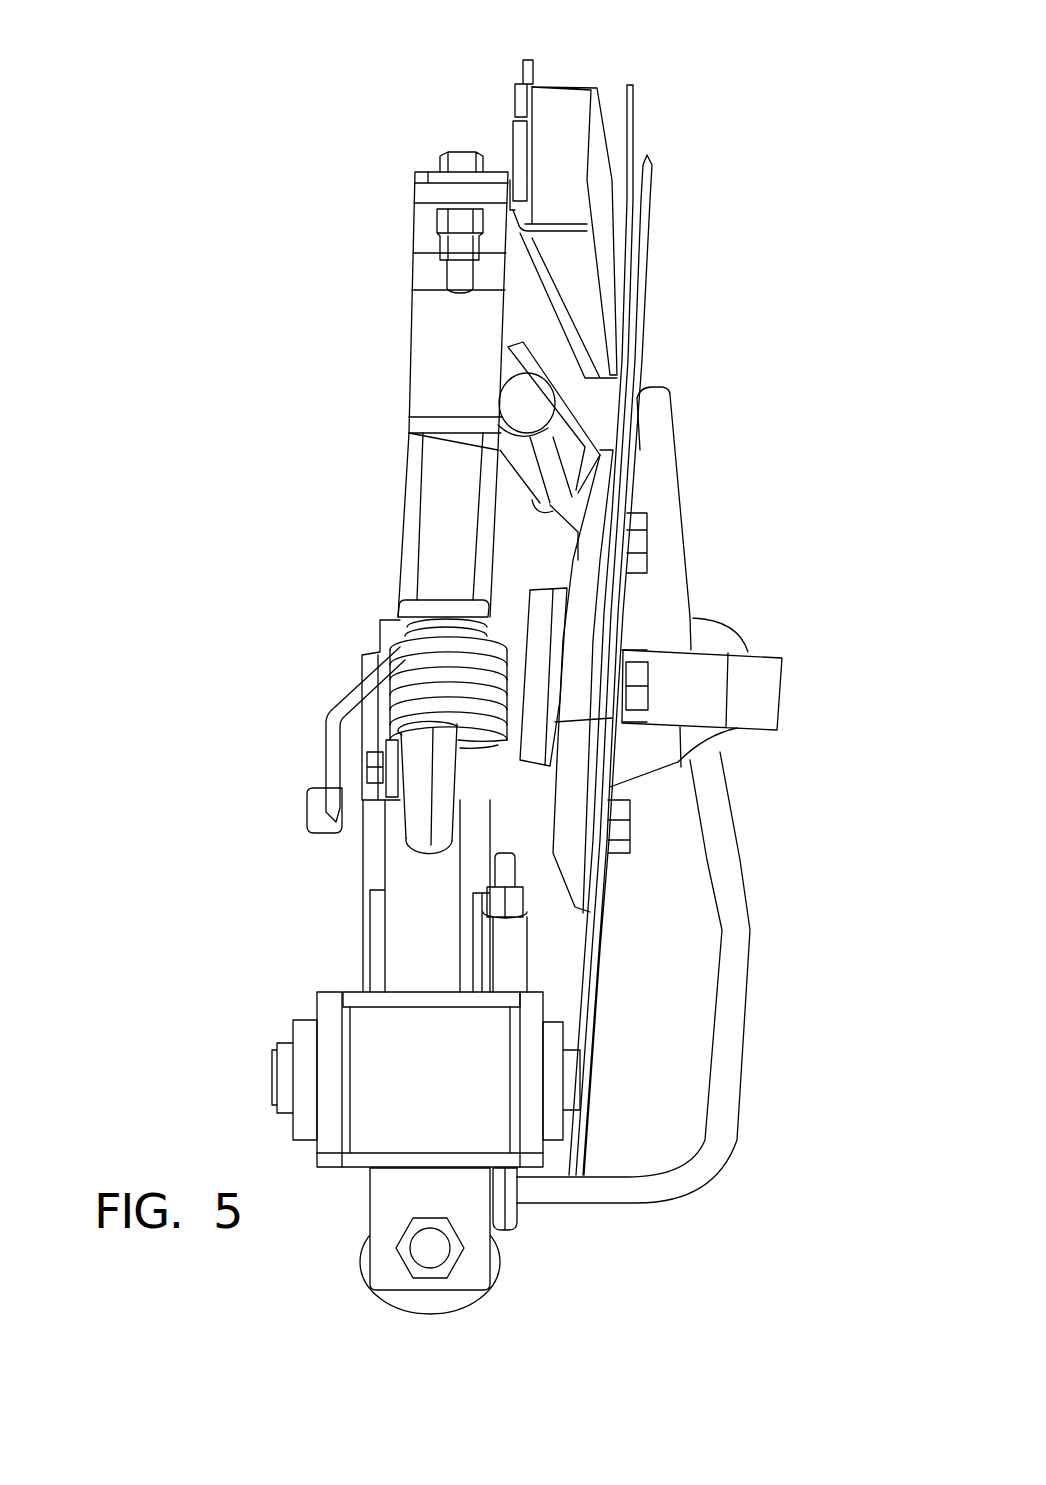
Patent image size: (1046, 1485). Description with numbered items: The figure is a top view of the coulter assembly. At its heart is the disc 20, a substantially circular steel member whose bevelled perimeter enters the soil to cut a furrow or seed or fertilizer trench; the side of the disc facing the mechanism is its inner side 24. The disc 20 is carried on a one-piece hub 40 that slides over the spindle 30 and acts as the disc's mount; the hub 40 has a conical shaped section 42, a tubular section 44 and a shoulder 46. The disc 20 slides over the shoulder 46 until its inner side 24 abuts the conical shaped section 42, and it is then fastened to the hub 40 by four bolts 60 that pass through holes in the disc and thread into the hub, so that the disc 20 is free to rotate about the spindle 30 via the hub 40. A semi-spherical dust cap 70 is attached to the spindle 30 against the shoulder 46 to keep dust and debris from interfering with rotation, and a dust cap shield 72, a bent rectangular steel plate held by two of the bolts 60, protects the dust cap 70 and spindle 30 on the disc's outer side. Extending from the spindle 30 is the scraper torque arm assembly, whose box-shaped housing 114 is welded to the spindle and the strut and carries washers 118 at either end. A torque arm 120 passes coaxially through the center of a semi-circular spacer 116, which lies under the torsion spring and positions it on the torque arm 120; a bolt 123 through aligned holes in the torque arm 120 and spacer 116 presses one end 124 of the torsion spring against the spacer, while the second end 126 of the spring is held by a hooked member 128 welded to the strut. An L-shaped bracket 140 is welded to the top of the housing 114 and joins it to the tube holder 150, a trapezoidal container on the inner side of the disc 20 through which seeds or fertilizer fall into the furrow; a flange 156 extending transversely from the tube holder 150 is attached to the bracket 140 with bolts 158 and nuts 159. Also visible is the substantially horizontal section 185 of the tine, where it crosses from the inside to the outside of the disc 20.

The disc 20 is at (647, 160).
The inner side 24 is at (630, 86).
The spindle 30 is at (510, 655).
The hub 40 is at (640, 612).
The conical shaped section 42 is at (603, 512).
The tubular section 44 is at (532, 612).
The shoulder 46 is at (652, 618).
The bolts 60 is at (647, 687).
The dust cap 70 is at (715, 640).
The dust cap shield 72 is at (757, 693).
The housing 114 is at (405, 458).
The spacer 116 is at (423, 770).
The washers 118 is at (397, 628).
The torque arm 120 is at (427, 852).
The bolt 123 is at (385, 780).
The one end of torsion spring 124 is at (380, 745).
The second end of torsion spring 126 is at (340, 690).
The hooked member 128 is at (320, 820).
The bracket 140 is at (440, 366).
The tube holder 150 is at (562, 82).
The flange 156 is at (500, 177).
The bolts 158 is at (462, 163).
The nuts 159 is at (458, 218).
The horizontal section 185 is at (593, 1192).